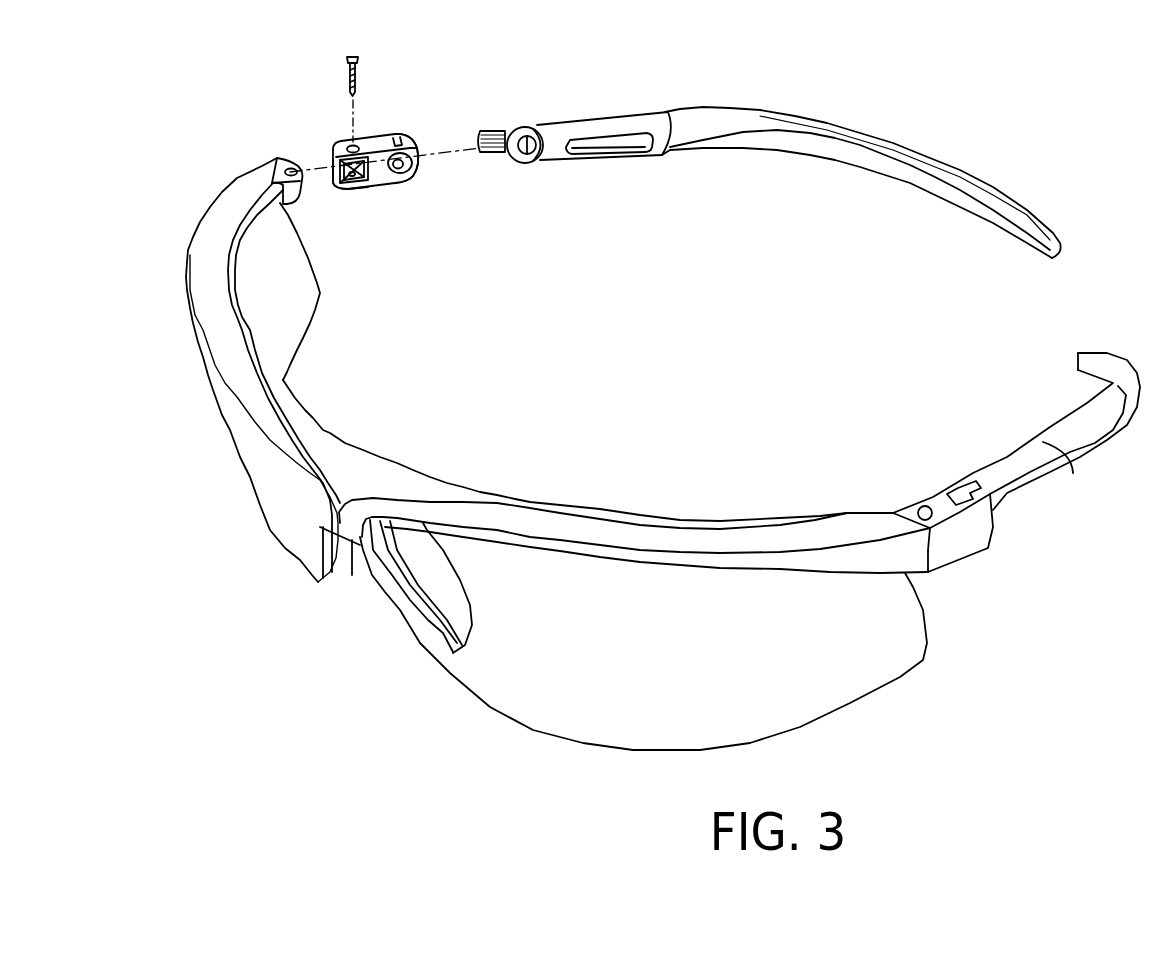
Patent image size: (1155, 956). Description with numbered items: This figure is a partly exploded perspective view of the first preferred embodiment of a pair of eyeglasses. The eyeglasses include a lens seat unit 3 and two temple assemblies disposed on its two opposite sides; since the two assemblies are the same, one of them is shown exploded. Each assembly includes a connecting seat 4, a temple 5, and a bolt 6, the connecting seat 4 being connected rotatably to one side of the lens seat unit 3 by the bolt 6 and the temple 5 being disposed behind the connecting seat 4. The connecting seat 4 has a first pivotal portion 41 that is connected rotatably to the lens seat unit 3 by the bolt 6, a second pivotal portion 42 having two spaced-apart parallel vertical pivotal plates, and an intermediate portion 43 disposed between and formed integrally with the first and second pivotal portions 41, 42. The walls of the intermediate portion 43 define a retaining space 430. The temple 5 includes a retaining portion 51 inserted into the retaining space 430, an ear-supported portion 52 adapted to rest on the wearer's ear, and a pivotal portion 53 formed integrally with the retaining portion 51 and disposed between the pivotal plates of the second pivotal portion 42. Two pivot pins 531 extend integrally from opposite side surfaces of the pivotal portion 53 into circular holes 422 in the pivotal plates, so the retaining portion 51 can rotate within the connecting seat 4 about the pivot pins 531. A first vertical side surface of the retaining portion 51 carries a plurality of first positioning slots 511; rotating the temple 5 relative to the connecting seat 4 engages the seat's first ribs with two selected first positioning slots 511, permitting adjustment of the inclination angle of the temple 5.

The lens seat unit 3 is at (345, 470).
The connecting seat 4 is at (643, 308).
The first pivotal portion 41 is at (345, 192).
The second pivotal portion 42 is at (417, 175).
The intermediate portion 43 is at (375, 182).
The retaining space 430 is at (357, 182).
The circular hole 422 is at (404, 160).
The temple 5 is at (799, 274).
The retaining portion 51 is at (488, 136).
The first positioning slots 511 is at (497, 156).
The ear-supported portion 52 is at (920, 160).
The pivotal portion 53 is at (557, 141).
The pivot pin 531 is at (530, 152).
The bolt 6 is at (350, 55).